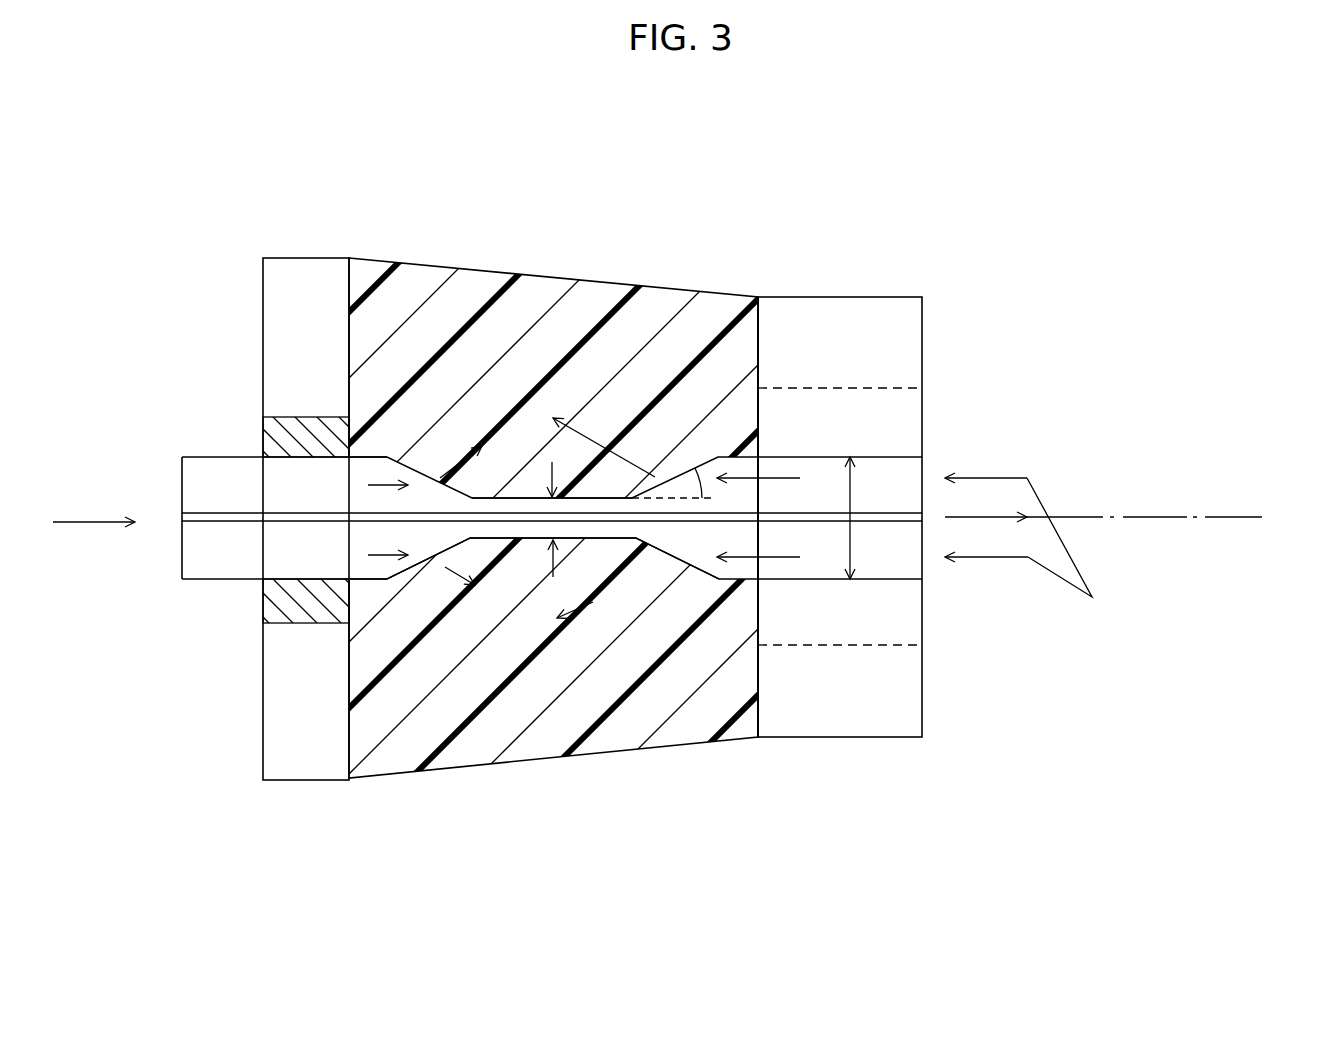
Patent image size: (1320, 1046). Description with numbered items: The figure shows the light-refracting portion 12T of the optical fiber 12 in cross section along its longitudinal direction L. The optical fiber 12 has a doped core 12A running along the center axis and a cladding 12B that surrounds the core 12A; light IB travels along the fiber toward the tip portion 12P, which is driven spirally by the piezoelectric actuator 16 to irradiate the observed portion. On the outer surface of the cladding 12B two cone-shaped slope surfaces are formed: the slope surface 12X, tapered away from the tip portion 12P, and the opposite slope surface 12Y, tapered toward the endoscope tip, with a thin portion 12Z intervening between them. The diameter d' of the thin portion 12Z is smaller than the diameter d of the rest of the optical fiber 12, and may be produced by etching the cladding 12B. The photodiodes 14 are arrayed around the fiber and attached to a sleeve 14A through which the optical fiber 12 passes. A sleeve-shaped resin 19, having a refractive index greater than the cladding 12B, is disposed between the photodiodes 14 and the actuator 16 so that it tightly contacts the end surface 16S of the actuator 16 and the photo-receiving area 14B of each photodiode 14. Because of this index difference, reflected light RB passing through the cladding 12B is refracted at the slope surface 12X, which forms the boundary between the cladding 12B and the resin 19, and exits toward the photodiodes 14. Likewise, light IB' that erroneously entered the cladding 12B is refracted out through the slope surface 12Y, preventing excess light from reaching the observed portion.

The optical fiber 12 is at (150, 495).
The doped core 12A is at (183, 523).
The cladding 12B is at (203, 488).
The tip portion 12P is at (921, 517).
The slope surface 12X is at (693, 568).
The slope surface 12Y is at (418, 566).
The thin portion 12Z is at (493, 498).
The light-refracting portion 12T is at (513, 574).
The photodiode 14 is at (292, 325).
The sleeve 14A is at (287, 441).
The photo-receiving area 14B is at (350, 337).
The piezoelectric actuator 16 is at (890, 340).
The end surface 16S is at (757, 337).
The sleeve-shaped resin 19 is at (565, 318).
The light IB is at (768, 552).
The light in the cladding IB' is at (453, 457).
The reflected light RB is at (1007, 442).
The longitudinal direction L is at (1157, 517).
The diameter d is at (861, 518).
The diameter of the thin portion d' is at (570, 519).